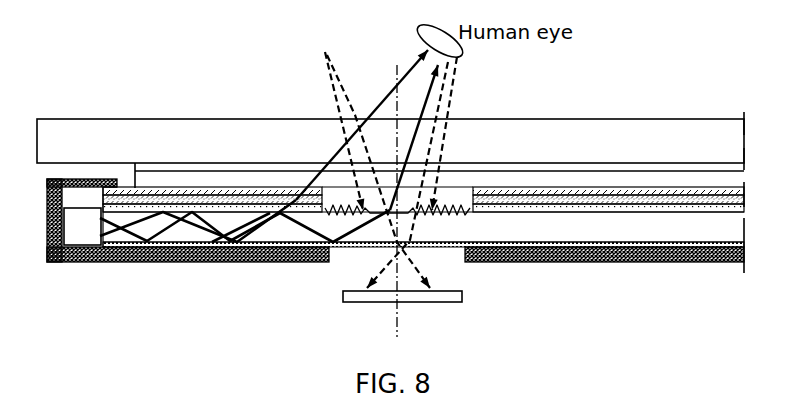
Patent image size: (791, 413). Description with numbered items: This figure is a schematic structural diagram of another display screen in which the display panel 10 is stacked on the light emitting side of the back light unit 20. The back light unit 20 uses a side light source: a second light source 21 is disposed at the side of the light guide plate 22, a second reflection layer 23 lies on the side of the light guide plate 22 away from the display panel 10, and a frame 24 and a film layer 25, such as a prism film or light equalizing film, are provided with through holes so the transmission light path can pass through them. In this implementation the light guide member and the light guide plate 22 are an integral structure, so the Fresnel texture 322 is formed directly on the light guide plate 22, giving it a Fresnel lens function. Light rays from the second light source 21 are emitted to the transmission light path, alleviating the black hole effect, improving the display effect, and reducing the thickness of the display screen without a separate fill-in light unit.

The display panel 10 is at (228, 130).
The back light unit 20 is at (395, 200).
The second light source 21 is at (77, 233).
The light guide plate 22 is at (530, 228).
The second reflection layer 23 is at (610, 247).
The frame 24 is at (145, 260).
The film layer 25 is at (562, 193).
The Fresnel texture 322 is at (462, 206).